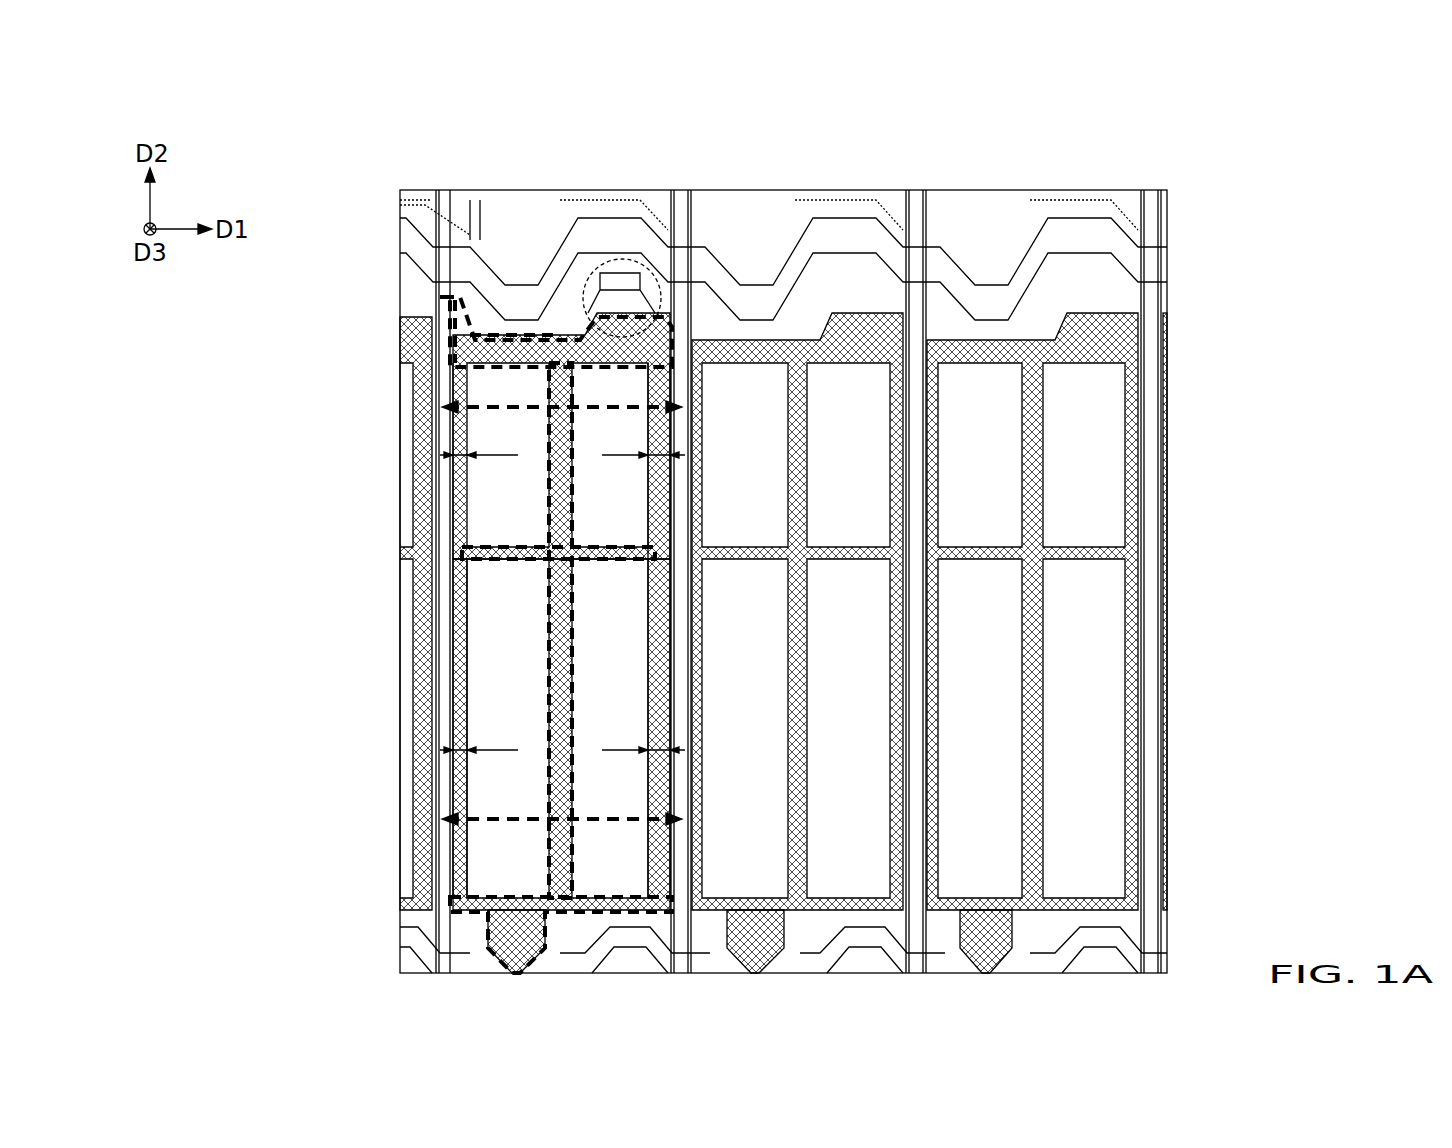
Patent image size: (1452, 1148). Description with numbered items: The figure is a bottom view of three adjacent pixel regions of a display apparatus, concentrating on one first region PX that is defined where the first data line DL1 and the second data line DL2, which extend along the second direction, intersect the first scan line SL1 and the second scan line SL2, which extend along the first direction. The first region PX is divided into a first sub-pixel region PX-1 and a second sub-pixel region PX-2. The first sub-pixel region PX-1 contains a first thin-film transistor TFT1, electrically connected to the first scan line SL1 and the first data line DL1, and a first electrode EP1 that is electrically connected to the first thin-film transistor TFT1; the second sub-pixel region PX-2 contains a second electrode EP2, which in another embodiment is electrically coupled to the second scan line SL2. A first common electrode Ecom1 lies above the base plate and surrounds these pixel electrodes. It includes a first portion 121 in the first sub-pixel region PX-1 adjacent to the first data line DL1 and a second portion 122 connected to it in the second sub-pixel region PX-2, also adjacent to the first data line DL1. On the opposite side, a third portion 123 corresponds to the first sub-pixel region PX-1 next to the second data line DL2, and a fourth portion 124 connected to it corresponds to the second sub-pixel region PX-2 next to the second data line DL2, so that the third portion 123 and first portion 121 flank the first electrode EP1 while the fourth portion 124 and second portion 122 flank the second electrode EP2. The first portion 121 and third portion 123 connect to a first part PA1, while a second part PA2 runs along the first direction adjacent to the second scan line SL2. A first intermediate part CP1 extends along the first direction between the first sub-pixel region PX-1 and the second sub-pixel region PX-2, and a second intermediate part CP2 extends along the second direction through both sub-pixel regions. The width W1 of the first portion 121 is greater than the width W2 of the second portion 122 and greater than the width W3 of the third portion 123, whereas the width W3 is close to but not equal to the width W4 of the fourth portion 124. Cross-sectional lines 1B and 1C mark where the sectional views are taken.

The first data line DL1 is at (680, 200).
The second data line DL2 is at (440, 200).
The first scan line SL1 is at (445, 245).
The second scan line SL2 is at (435, 955).
The first common electrode Ecom1 is at (535, 332).
The first thin-film transistor TFT1 is at (620, 262).
The first portion 121 is at (662, 433).
The second portion 122 is at (664, 643).
The third portion 123 is at (458, 478).
The fourth portion 124 is at (458, 693).
The first part PA1 is at (445, 302).
The second part PA2 is at (445, 912).
The first intermediate part CP1 is at (415, 553).
The second intermediate part CP2 is at (445, 330).
The first electrode EP1 is at (490, 505).
The second electrode EP2 is at (595, 850).
The first region PX is at (563, 556).
The first sub-pixel region PX-1 is at (458, 420).
The second sub-pixel region PX-2 is at (458, 660).
The cross-sectional line 1B- 1B is at (462, 405).
The cross-sectional line 1C- 1C is at (462, 817).
The width of the first portion W1 is at (643, 443).
The width of the second portion W2 is at (641, 738).
The width of the third portion W3 is at (479, 443).
The width of the fourth portion W4 is at (479, 738).